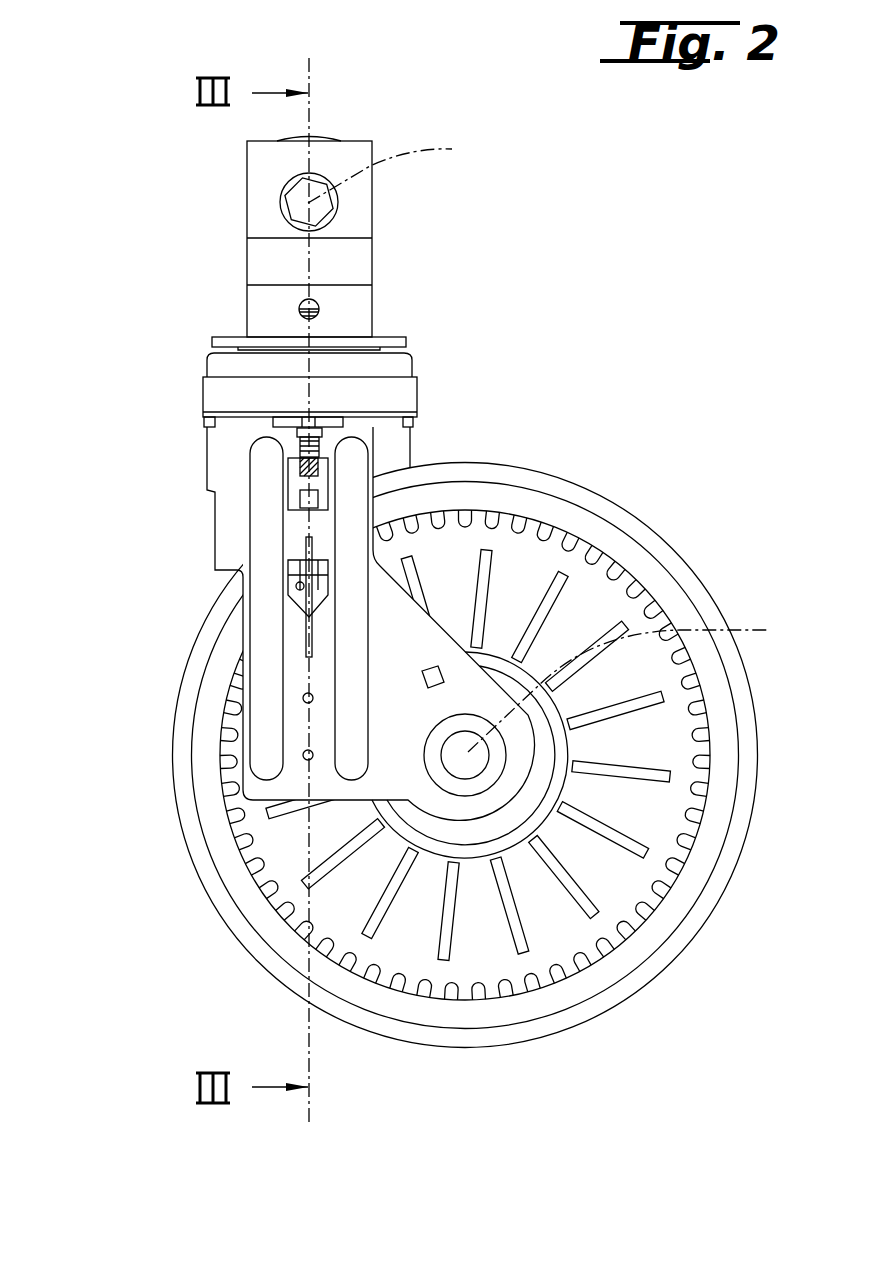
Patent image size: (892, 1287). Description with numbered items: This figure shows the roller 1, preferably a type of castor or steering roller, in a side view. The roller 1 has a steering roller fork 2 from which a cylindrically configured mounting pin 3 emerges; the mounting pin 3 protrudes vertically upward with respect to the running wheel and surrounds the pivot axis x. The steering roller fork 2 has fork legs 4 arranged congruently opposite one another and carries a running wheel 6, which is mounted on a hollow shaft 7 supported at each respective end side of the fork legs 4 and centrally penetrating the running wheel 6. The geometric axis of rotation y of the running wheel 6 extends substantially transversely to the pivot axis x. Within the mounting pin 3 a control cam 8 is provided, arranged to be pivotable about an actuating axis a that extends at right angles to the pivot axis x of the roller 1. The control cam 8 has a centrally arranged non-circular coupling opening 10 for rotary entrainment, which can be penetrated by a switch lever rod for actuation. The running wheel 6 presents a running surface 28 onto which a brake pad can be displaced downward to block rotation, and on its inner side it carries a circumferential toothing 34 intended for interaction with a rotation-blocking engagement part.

The roller 1 is at (497, 232).
The steering roller fork 2 is at (233, 533).
The mounting pin 3 is at (408, 313).
The fork legs 4 is at (273, 671).
The running wheel 6 is at (667, 543).
The hollow shaft 7 is at (480, 767).
The control cam 8 is at (288, 219).
The coupling opening 10 is at (300, 203).
The running surface 28 is at (620, 512).
The circumferential toothing 34 is at (660, 890).
The actuating axis a is at (389, 169).
The pivot axis x is at (308, 590).
The geometric axis of rotation y is at (627, 684).